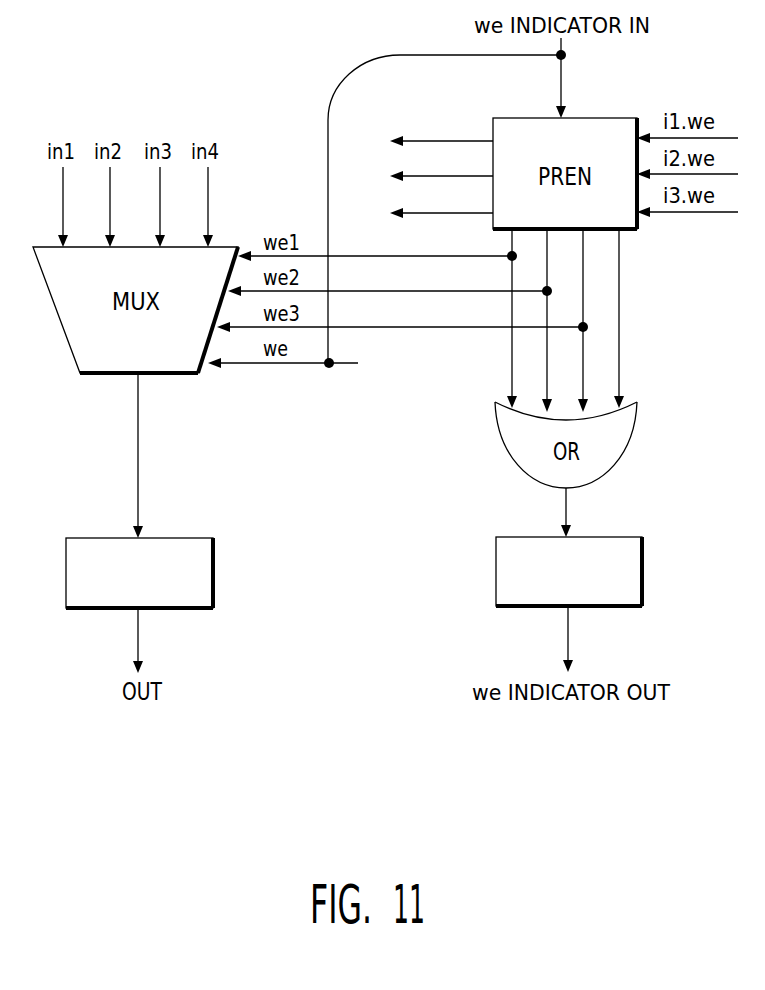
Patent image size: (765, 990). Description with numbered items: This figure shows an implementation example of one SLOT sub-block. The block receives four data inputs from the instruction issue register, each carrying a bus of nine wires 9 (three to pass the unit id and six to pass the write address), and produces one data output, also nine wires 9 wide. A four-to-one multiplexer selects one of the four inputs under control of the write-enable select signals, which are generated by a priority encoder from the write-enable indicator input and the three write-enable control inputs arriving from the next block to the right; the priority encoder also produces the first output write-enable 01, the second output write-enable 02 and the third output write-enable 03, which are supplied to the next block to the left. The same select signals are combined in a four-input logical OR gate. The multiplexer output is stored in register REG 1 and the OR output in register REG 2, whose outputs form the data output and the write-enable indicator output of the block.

The wires 9 is at (68, 178).
The register REG1 1 is at (139, 573).
The register REG2 2 is at (569, 571).
The o1.we control signal output 01 is at (441, 129).
The o2.we control signal output 02 is at (441, 165).
The o3.we control signal output 03 is at (441, 201).